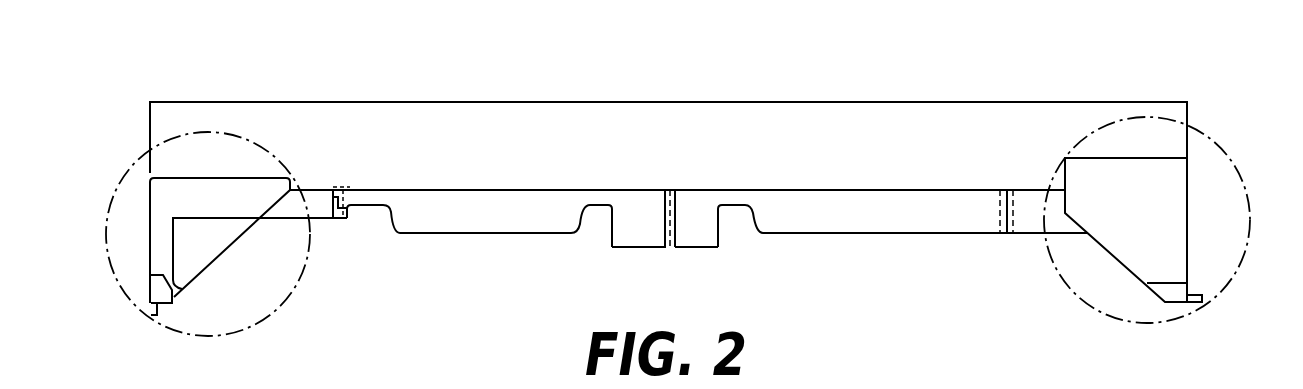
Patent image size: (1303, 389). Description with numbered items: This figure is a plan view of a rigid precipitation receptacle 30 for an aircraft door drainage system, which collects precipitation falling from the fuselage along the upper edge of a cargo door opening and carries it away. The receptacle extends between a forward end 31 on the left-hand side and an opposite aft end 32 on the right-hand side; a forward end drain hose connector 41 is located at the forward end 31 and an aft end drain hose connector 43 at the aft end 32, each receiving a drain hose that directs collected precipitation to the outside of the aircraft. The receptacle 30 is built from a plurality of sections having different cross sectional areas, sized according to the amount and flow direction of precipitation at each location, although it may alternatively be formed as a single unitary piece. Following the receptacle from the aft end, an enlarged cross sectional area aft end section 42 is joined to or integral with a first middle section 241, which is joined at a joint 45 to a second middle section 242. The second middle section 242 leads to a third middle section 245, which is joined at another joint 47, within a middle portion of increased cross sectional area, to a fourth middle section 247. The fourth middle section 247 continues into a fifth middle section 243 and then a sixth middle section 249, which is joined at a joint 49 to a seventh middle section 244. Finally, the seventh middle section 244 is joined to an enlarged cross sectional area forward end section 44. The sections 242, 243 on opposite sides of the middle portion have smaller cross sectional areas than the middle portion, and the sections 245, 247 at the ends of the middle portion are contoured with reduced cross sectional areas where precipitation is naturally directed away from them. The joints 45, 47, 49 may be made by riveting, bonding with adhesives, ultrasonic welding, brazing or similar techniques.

The rigid precipitation receptacle 30 is at (548, 119).
The forward end 31 is at (135, 201).
The aft end 32 is at (1198, 158).
The forward end drain hose connector 41 is at (152, 310).
The aft end section 42 is at (1093, 173).
The aft end drain hose connector 43 is at (1207, 293).
The forward end section 44 is at (207, 190).
The joint 45 is at (1007, 190).
The joint 47 is at (667, 190).
The joint 49 is at (333, 190).
The first middle section 241 is at (1023, 198).
The second middle section 242 is at (878, 202).
The fifth middle section 243 is at (545, 197).
The seventh middle section 244 is at (322, 197).
The third middle section 245 is at (722, 197).
The fourth middle section 247 is at (605, 197).
The sixth middle section 249 is at (388, 195).